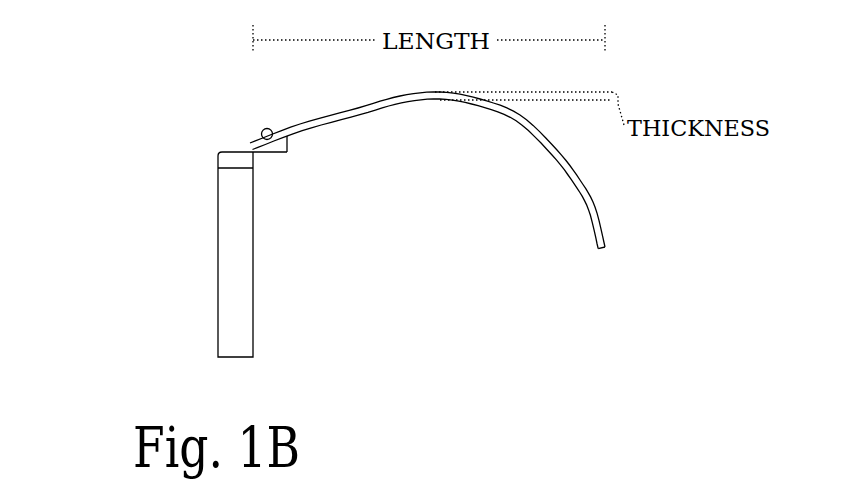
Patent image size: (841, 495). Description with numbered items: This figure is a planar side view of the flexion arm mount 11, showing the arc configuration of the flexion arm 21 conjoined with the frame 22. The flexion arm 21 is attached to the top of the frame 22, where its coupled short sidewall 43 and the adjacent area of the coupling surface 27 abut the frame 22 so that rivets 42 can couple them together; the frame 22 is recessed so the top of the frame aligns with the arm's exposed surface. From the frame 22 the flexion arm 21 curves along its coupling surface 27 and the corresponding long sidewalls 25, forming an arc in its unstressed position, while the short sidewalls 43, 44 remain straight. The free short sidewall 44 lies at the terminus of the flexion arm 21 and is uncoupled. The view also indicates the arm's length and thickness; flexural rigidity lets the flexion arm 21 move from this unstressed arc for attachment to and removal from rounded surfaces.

The flexion arm mount 11 is at (358, 98).
The flexion arm 21 is at (380, 118).
The frame 22 is at (245, 240).
The long sidewall 25 is at (440, 102).
The coupling surface 27 is at (287, 152).
The rivets 42 is at (263, 131).
The coupled short sidewall 43 is at (258, 142).
The free short sidewall 44 is at (603, 250).